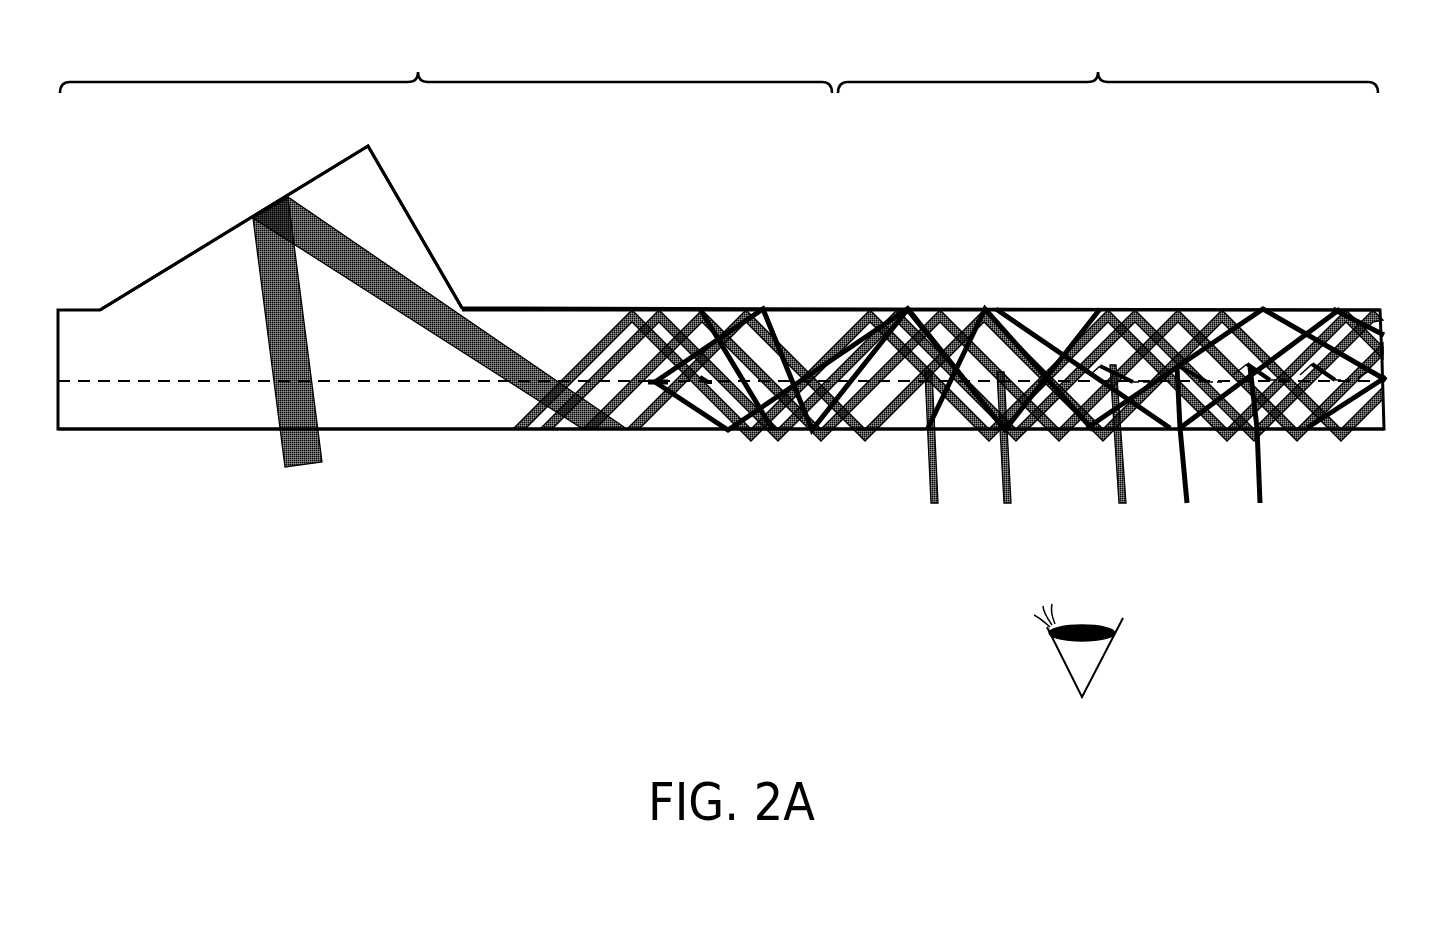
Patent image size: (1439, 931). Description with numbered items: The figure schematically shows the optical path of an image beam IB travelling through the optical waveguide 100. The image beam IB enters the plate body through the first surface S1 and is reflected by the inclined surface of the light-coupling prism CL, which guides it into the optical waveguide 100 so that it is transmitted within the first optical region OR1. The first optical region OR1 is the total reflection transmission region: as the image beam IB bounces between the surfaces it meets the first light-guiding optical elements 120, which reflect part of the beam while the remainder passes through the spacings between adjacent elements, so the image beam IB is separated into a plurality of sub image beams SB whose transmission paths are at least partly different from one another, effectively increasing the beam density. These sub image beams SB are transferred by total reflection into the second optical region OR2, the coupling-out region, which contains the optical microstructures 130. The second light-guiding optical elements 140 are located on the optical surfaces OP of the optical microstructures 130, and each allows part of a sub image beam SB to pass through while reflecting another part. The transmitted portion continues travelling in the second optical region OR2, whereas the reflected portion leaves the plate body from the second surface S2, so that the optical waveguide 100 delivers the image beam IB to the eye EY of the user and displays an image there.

The optical waveguide 100 is at (1410, 734).
The first light-guiding optical element 120 is at (652, 378).
The optical microstructure 130 is at (1104, 352).
The second light-guiding optical element 140 is at (1138, 364).
The light-coupling prism CL is at (336, 187).
The image beam IB is at (318, 451).
The optical surface OP is at (1243, 355).
The first optical region OR1 is at (446, 67).
The second optical region OR2 is at (1108, 67).
The first surface S1 is at (1354, 296).
The second surface S2 is at (1360, 434).
The sub image beam SB is at (938, 500).
The eye EY is at (1110, 655).